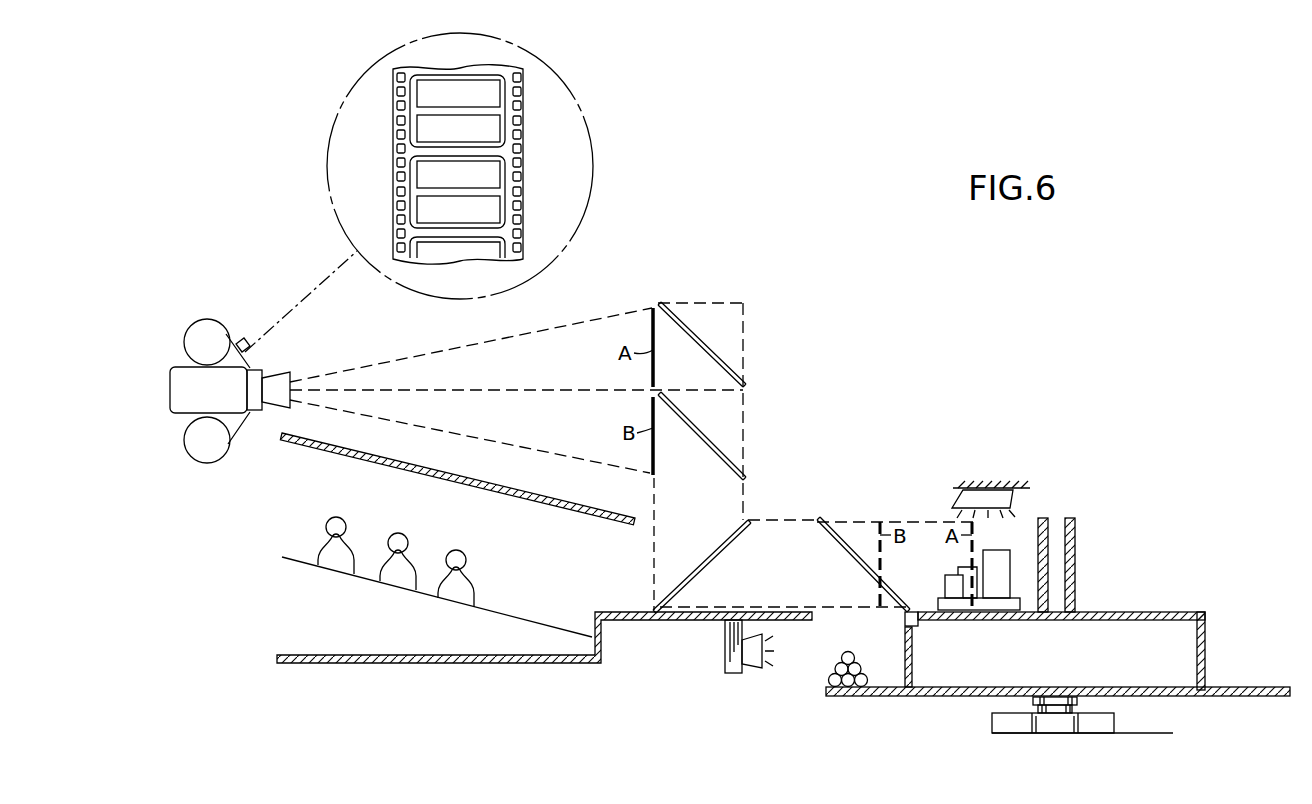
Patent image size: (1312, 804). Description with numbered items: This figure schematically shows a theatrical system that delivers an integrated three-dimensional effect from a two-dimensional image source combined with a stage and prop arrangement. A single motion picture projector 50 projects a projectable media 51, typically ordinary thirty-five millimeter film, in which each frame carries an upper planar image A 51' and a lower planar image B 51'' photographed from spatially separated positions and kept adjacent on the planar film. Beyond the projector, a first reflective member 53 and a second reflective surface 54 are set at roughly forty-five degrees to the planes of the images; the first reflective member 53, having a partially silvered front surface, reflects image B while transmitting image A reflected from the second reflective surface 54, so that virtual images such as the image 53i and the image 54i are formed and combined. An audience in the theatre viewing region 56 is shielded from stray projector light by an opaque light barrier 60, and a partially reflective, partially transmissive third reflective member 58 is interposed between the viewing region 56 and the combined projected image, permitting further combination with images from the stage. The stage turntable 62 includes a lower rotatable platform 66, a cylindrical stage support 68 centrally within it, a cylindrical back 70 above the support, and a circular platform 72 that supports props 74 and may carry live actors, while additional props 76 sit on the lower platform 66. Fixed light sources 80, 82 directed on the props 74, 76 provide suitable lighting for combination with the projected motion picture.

The motion picture projector 50 is at (213, 320).
The projectable media 51 is at (484, 166).
The upper planar image A 51' is at (489, 179).
The lower planar image B 51'' is at (496, 210).
The first reflective member 53 is at (718, 451).
The image of mirror 53 / image plane B 53i is at (881, 553).
The second reflective surface 54 is at (716, 352).
The imaged object (image A) 54i is at (996, 549).
The theatre viewing region 56 is at (306, 535).
The third reflective member 58 is at (726, 548).
The opaque light barrier 60 is at (443, 471).
The stage turntable 62 is at (1090, 637).
The lower rotatable platform 66 is at (1253, 693).
The cylindrical stage support 68 is at (905, 650).
The cylindrical back 70 is at (1075, 565).
The circular platform 72 is at (1127, 613).
The props 74 is at (1012, 553).
The additional props 76 is at (833, 675).
The fixed light source 80 is at (953, 504).
The fixed light source 82 is at (754, 634).